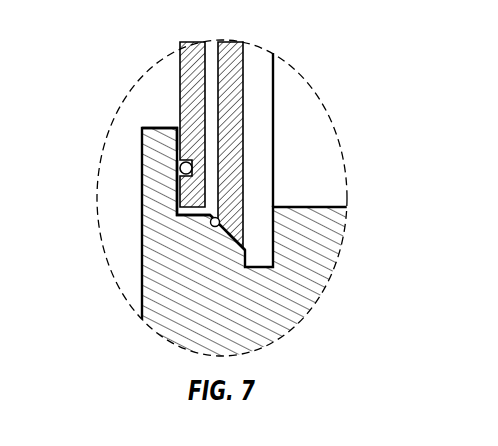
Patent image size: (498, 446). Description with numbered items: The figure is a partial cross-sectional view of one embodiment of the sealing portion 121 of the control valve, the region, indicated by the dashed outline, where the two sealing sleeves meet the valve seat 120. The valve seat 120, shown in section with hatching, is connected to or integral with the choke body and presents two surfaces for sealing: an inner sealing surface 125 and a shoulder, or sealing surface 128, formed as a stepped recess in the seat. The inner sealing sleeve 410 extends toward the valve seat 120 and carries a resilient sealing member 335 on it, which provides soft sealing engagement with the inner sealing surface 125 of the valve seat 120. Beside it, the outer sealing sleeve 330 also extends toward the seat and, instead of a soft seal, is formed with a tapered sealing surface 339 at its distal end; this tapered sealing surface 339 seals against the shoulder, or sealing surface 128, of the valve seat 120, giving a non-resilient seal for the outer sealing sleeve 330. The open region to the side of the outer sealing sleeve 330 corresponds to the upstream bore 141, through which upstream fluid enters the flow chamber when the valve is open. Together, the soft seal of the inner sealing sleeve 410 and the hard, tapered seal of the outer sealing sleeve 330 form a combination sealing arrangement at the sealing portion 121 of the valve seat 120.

The valve seat 120 is at (135, 232).
The sealing portion 121 is at (294, 63).
The inner sealing surface 125 is at (178, 128).
The shoulder 128 is at (210, 219).
The upstream bore 141 is at (290, 98).
The outer sealing sleeve 330 is at (240, 161).
The resilient sealing member 335 is at (181, 165).
The tapered sealing surface 339 is at (238, 236).
The inner sealing sleeve 410 is at (190, 55).